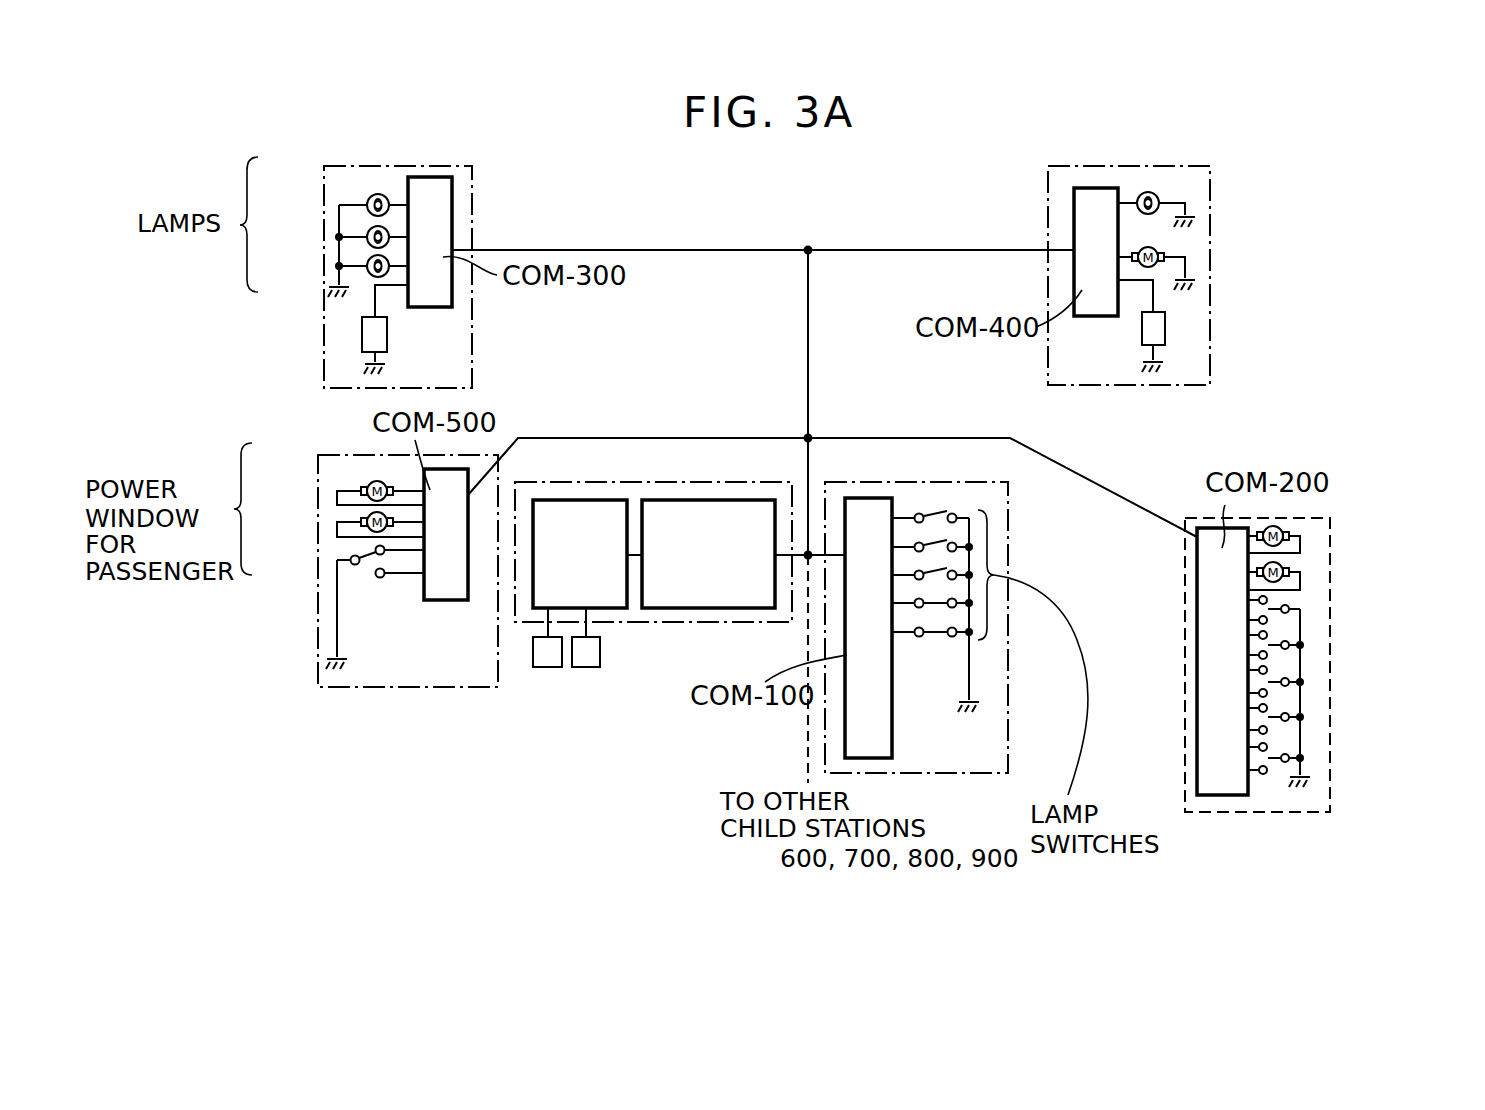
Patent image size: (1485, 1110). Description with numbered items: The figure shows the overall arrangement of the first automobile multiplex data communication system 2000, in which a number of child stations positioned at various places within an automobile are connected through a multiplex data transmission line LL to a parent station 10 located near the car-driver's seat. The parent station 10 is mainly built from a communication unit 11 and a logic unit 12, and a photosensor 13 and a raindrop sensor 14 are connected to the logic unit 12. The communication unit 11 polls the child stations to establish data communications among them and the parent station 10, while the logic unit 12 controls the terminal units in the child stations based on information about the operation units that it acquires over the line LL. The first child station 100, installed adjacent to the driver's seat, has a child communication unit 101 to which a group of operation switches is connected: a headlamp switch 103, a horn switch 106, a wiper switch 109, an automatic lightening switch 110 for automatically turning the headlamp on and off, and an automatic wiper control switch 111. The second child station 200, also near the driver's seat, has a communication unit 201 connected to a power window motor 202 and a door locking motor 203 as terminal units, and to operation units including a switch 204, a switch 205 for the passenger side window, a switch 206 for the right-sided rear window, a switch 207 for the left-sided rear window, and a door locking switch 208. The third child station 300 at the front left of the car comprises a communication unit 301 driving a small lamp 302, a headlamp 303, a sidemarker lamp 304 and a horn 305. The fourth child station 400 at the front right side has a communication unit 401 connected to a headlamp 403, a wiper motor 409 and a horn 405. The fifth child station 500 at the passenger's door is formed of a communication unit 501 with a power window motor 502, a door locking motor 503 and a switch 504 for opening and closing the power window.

The automobile multiplex data communication system 2000 is at (1146, 103).
The parent station 10 is at (678, 631).
The communication unit 11 is at (743, 500).
The logic unit 12 is at (598, 500).
The photosensor 13 is at (547, 667).
The raindrop sensor 14 is at (586, 667).
The first child station 100 is at (892, 478).
The child communication unit 101 is at (893, 738).
The automatic lightening switch 110 is at (962, 512).
The headlamp switch 103 is at (962, 540).
The wiper switch 109 is at (960, 568).
The horn switch 106 is at (963, 612).
The automatic wiper control switch 111 is at (950, 640).
The second child station 200 is at (1237, 815).
The communication unit 201 is at (1197, 786).
The power window motor 202 is at (1292, 527).
The door locking motor 203 is at (1292, 563).
The switch 204 is at (1292, 603).
The switch 205 is at (1292, 640).
The switch 206 is at (1290, 675).
The switch 207 is at (1290, 712).
The door locking switch 208 is at (1290, 750).
The third child station 300 is at (562, 160).
The communication unit 301 is at (455, 197).
The small lamp 302 is at (360, 202).
The headlamp 303 is at (358, 230).
The sidemarker lamp 304 is at (360, 260).
The horn 305 is at (388, 335).
The fourth child station 400 is at (1220, 173).
The communication unit 401 is at (1074, 228).
The headlamp 403 is at (1160, 197).
The wiper motor 409 is at (1160, 243).
The horn 405 is at (1140, 330).
The fifth child station 500 is at (455, 737).
The communication unit 501 is at (447, 600).
The power window motor 502 is at (357, 480).
The door locking motor 503 is at (350, 516).
The switch 504 is at (363, 553).